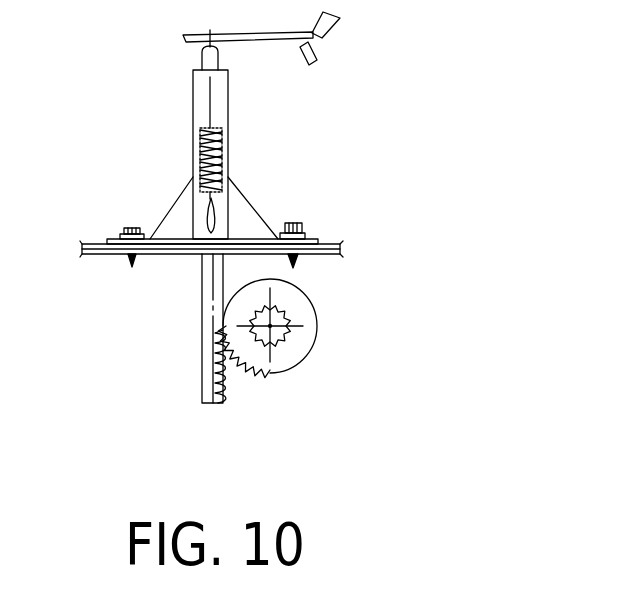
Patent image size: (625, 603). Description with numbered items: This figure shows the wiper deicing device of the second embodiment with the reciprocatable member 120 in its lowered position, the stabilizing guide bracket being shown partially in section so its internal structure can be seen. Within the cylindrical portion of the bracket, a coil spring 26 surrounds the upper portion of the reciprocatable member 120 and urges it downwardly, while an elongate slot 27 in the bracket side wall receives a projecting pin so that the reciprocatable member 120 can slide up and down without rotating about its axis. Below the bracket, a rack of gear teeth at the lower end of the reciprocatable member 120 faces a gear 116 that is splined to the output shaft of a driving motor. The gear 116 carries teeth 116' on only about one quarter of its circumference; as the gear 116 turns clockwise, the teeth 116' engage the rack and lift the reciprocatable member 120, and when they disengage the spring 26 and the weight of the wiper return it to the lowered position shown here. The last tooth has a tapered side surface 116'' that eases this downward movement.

The coil spring 26 is at (193, 127).
The elongate slot 27 is at (205, 217).
The gear 116 is at (334, 318).
The teeth 116' is at (272, 399).
The tapered side surface 116'' is at (329, 369).
The reciprocatable member 120 is at (202, 318).